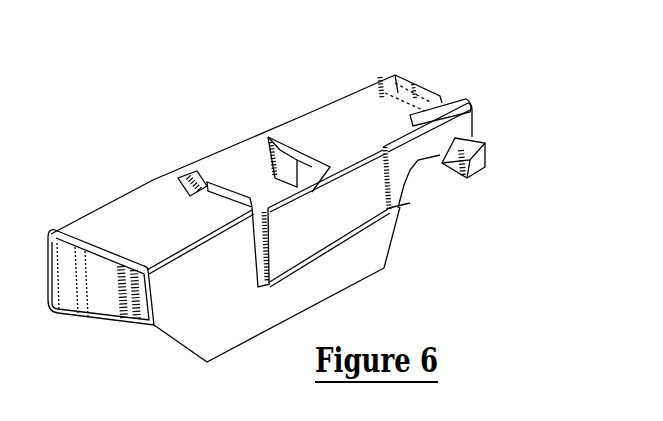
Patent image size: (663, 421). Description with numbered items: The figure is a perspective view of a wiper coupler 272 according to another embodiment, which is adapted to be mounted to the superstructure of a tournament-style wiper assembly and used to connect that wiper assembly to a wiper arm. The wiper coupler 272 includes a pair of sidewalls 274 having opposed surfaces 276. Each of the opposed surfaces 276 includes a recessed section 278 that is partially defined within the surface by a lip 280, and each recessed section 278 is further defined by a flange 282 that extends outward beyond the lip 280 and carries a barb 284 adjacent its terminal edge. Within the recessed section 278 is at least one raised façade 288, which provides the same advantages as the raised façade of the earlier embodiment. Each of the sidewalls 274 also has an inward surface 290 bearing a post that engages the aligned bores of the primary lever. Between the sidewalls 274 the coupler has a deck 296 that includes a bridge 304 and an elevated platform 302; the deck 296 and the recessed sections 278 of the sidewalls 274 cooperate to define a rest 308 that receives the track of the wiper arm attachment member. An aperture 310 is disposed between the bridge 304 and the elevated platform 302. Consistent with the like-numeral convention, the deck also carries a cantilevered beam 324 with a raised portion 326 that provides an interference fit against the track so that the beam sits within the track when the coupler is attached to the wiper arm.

The wiper coupler 272 is at (123, 122).
The sidewalls 274 is at (248, 342).
The opposed surfaces 276 is at (372, 262).
The recessed section 278 is at (395, 187).
The lip 280 is at (403, 207).
The flange 282 is at (471, 124).
The barb 284 is at (485, 160).
The raised façade 288 is at (300, 242).
The inward surface 290 is at (102, 310).
The deck 296 is at (329, 106).
The elevated platform 302 is at (87, 227).
The bridge 304 is at (232, 178).
The rest 308 is at (448, 83).
The aperture 310 is at (197, 177).
The cantilevered beam 324 is at (378, 97).
The raised portion 326 is at (408, 83).